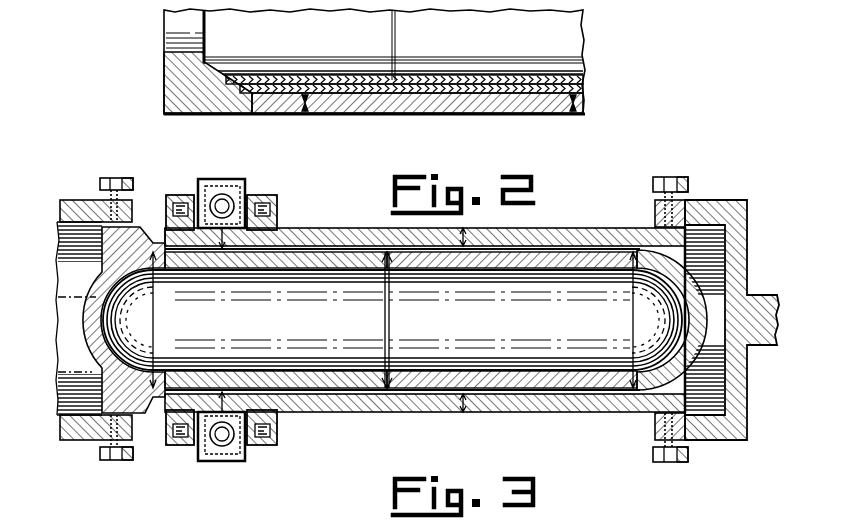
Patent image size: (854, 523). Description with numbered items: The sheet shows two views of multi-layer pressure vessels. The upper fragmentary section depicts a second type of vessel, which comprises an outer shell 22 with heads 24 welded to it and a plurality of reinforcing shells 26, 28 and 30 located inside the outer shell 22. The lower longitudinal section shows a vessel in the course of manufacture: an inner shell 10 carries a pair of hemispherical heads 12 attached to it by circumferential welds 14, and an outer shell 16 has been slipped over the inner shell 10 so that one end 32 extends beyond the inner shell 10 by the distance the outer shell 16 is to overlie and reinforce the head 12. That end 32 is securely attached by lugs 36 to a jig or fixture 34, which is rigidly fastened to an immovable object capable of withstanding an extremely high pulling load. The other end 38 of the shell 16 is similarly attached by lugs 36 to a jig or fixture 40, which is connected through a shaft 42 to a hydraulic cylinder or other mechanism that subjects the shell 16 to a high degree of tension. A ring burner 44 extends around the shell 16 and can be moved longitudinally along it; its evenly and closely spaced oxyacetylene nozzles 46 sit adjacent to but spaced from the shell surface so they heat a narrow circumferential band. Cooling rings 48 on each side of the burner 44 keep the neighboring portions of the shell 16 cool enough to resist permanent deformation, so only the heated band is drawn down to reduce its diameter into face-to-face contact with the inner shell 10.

In FIG. 3, the inner shell 10 is at (368, 268).
In FIG. 3, the hemispherical heads 12 is at (110, 357).
In FIG. 3, the circumferential welds 14 is at (172, 272).
In FIG. 3, the outer shell 16 is at (336, 218).
In FIG. 2, the outer shell 22 is at (366, 112).
In FIG. 2, the heads 24 is at (218, 107).
In FIG. 2, the reinforcing shell 26 is at (390, 90).
In FIG. 2, the reinforcing shell 28 is at (413, 85).
In FIG. 2, the reinforcing shell 30 is at (443, 77).
In FIG. 3, the end of shell 32 is at (100, 238).
In FIG. 3, the jig or fixture 34 is at (70, 206).
In FIG. 3, the lugs 36 is at (117, 183).
In FIG. 3, the other end of shell 38 is at (660, 222).
In FIG. 3, the jig or fixture 40 is at (742, 232).
In FIG. 3, the shaft 42 is at (752, 300).
In FIG. 3, the ring burner 44 is at (227, 173).
In FIG. 3, the oxyacetylene nozzles 46 is at (243, 190).
In FIG. 3, the cooling rings 48 is at (180, 195).